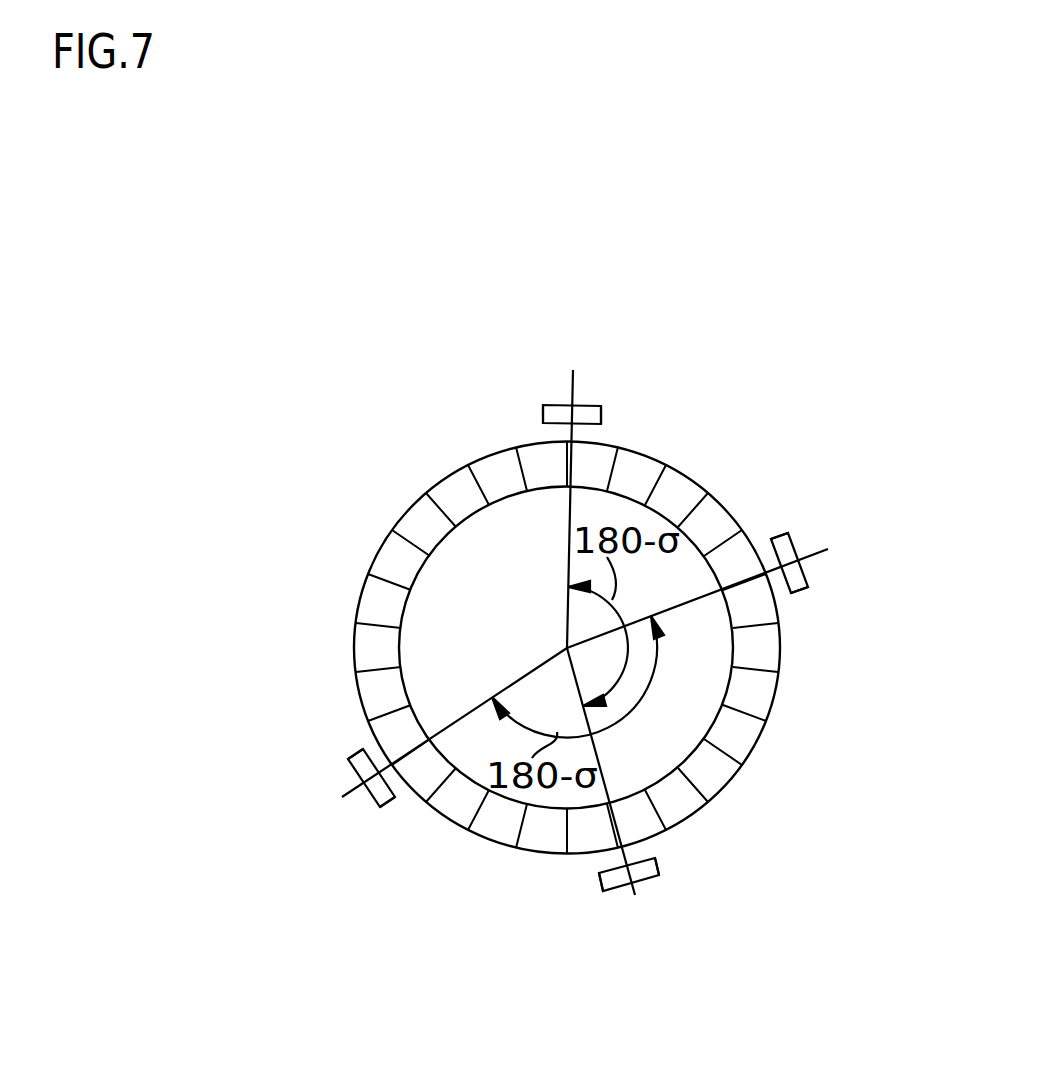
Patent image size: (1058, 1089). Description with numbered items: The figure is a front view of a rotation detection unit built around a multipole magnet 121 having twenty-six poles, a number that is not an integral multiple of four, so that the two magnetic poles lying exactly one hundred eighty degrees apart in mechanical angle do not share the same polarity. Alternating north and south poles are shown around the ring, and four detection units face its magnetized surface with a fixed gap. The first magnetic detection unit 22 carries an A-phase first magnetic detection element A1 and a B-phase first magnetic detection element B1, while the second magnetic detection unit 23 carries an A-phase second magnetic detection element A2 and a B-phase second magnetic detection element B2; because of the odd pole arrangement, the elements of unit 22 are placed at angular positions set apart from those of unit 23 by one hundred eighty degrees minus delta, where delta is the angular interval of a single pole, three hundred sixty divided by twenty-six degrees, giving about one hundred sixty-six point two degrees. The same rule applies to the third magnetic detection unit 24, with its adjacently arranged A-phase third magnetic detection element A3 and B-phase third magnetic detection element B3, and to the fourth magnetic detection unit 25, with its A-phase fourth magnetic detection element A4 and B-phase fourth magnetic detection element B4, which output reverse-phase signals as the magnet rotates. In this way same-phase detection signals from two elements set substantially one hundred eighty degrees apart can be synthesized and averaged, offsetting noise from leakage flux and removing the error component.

The multipole magnet 121 is at (397, 514).
The first magnetic detection unit 22 is at (591, 391).
The second magnetic detection unit 23 is at (625, 893).
The third magnetic detection unit 24 is at (819, 570).
The fourth magnetic detection unit 25 is at (337, 780).
The A-phase first magnetic detection element A1 is at (542, 417).
The B-phase first magnetic detection element B1 is at (602, 416).
The A-phase second magnetic detection element A2 is at (658, 863).
The B-phase second magnetic detection element B2 is at (599, 875).
The A-phase third magnetic detection element A3 is at (779, 538).
The B-phase third magnetic detection element B3 is at (802, 592).
The A-phase fourth magnetic detection element A4 is at (388, 808).
The B-phase fourth magnetic detection element B4 is at (352, 758).